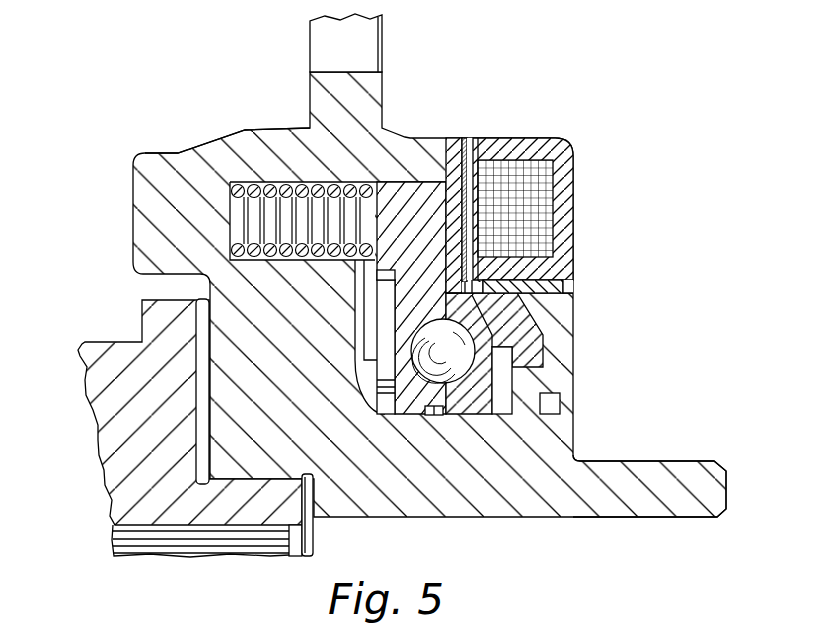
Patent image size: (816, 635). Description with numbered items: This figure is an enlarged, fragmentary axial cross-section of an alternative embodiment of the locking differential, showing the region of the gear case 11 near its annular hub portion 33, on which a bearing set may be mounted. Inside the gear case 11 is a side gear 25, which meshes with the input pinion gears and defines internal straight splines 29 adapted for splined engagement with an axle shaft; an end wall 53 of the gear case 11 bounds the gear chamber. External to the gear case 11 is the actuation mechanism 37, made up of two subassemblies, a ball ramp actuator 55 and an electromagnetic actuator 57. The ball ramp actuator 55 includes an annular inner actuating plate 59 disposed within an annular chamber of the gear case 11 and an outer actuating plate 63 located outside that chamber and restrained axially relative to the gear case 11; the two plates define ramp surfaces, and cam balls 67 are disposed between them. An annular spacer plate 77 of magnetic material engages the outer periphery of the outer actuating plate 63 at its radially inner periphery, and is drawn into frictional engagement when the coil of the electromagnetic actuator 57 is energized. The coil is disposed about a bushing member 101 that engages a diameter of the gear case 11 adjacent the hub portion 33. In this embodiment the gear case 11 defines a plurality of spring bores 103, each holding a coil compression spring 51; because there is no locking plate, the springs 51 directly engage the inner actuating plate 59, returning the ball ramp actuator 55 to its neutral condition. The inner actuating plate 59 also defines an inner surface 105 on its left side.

The gear case 11 is at (140, 188).
The coil compression spring 51 is at (268, 162).
The inner actuating plate 59 is at (420, 203).
The spacer plate 77 is at (455, 143).
The electromagnetic actuator 57 is at (555, 126).
The actuation mechanism 37 is at (594, 272).
The spring bore 103 is at (218, 228).
The inner surface 105 is at (395, 303).
The end wall 53 is at (292, 344).
The side gear 25 is at (128, 456).
The internal straight splines 29 is at (190, 549).
The ball ramp actuator 55 is at (437, 432).
The outer actuating plate 63 is at (477, 398).
The cam ball 67 is at (462, 356).
The bushing member 101 is at (525, 305).
The annular hub portion 33 is at (684, 461).